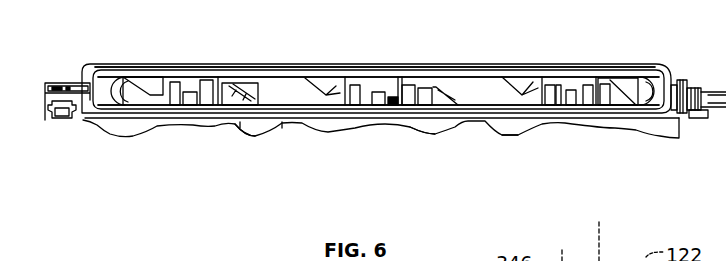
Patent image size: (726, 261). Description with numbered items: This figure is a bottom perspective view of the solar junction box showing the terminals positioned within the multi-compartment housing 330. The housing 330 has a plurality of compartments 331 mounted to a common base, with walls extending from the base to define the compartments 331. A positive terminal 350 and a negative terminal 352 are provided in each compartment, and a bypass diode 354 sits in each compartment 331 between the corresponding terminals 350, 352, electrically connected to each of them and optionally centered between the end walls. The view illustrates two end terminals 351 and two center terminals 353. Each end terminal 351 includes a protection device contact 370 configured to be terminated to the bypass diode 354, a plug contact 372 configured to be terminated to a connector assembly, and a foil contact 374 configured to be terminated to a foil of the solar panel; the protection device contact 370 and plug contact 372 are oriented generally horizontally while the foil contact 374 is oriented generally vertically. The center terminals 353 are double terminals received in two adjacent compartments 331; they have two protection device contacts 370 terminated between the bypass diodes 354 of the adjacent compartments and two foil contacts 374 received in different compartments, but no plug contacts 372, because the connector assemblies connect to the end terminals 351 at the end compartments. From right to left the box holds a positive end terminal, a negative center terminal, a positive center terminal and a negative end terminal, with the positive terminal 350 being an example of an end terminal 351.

The multi-compartment housing 330 is at (633, 127).
The compartments 331 is at (227, 138).
The positive terminal 350 is at (283, 93).
The end terminals 351 is at (148, 101).
The negative terminal 352 is at (133, 98).
The center terminals 353 is at (462, 90).
The bypass diode 354 is at (192, 103).
The protection device contact 370 is at (406, 87).
The plug contact 372 is at (113, 96).
The foil contact 374 is at (140, 91).